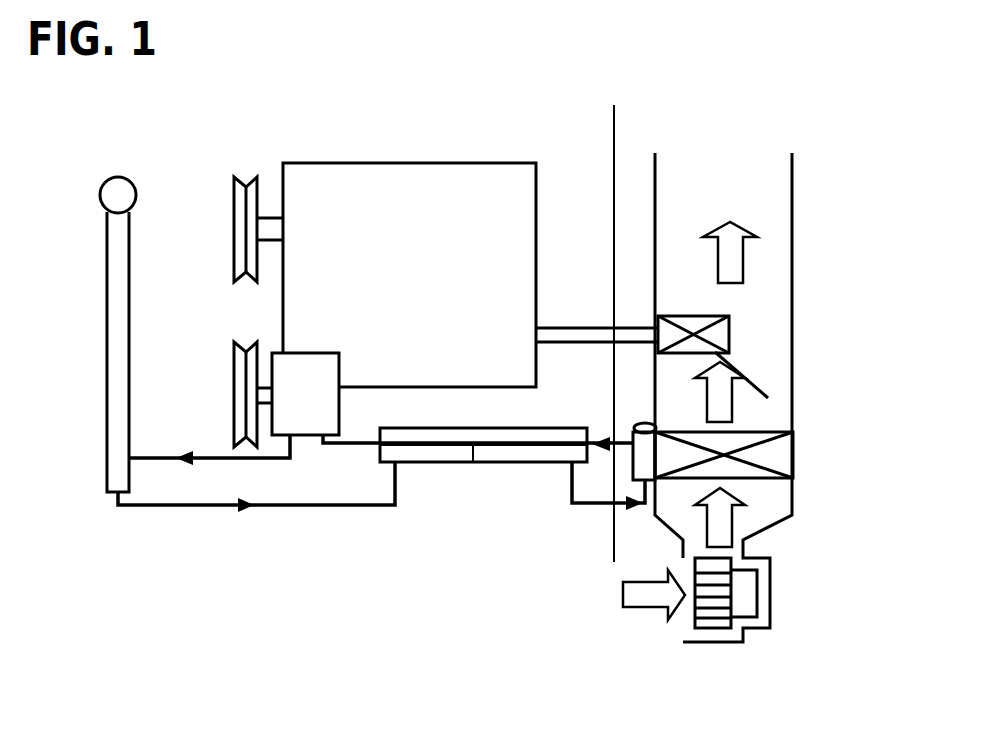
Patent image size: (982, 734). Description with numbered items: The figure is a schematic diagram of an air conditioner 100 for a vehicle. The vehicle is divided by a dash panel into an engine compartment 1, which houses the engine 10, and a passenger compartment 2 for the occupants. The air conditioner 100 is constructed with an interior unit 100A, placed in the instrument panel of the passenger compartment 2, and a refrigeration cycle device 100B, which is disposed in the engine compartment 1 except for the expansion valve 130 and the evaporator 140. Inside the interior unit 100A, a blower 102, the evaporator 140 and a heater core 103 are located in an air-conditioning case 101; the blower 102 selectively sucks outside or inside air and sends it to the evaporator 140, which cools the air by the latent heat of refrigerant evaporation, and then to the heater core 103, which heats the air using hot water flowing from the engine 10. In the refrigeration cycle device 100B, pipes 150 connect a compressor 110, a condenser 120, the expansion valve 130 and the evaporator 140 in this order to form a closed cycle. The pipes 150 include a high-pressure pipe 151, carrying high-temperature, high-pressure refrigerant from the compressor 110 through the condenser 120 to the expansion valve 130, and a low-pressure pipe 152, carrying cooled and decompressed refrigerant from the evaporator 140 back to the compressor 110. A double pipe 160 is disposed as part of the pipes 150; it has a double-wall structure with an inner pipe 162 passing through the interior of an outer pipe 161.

The engine compartment 1 is at (598, 112).
The passenger compartment 2 is at (637, 115).
The engine 10 is at (316, 176).
The air conditioner 100 is at (461, 625).
The interior unit 100A is at (814, 192).
The refrigeration cycle device 100B is at (246, 525).
The air-conditioning case 101 is at (793, 272).
The blower 102 is at (747, 598).
The heater core 103 is at (723, 337).
The compressor 110 is at (277, 372).
The condenser 120 is at (117, 345).
The expansion valve 130 is at (652, 470).
The evaporator 140 is at (782, 457).
The pipes 150 is at (152, 452).
The high-pressure pipe 151 is at (137, 505).
The low-pressure pipe 152 is at (353, 442).
The double pipe 160 is at (476, 496).
The outer pipe 161 is at (435, 463).
The inner pipe 162 is at (473, 463).